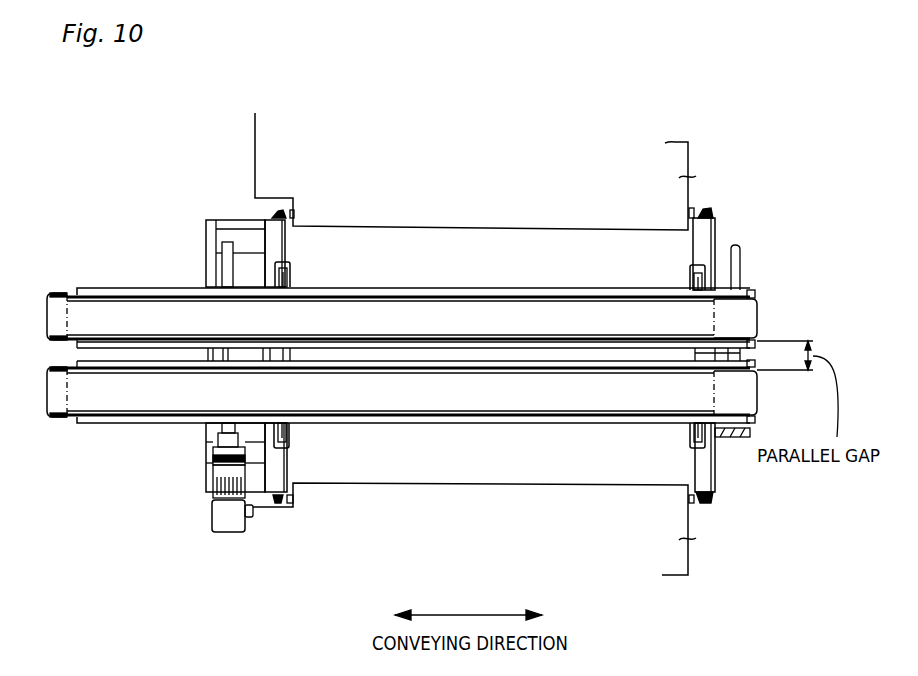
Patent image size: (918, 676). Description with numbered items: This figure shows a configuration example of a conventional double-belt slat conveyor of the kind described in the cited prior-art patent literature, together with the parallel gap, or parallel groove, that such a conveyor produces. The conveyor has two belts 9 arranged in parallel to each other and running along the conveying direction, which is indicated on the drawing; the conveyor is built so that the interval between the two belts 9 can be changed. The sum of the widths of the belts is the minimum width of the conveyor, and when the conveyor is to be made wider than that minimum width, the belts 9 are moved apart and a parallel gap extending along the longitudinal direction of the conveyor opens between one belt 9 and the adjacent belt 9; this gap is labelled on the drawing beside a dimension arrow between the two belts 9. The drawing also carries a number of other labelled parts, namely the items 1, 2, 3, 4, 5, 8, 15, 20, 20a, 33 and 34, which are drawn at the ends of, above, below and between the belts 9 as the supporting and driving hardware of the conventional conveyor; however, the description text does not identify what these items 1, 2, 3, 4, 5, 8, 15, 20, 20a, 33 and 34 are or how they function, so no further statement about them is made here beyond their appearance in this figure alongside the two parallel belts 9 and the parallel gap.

The lower conveyor unit 1 is at (35, 408).
The upper conveyor unit 2 is at (38, 306).
The guide plate 3 is at (105, 290).
The bearing 4 is at (71, 293).
The pulley 5 is at (712, 318).
The shaft 8 is at (69, 318).
The belt 9 is at (466, 315).
The motor 15 is at (212, 516).
The frame 20 is at (206, 222).
The frame side portion 20a is at (697, 177).
The bracket 33 is at (291, 266).
The bracket 34 is at (688, 271).